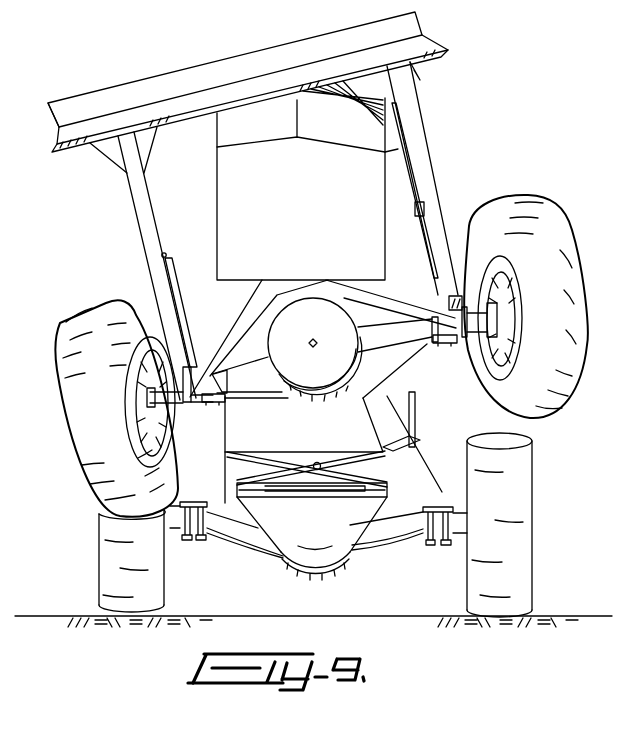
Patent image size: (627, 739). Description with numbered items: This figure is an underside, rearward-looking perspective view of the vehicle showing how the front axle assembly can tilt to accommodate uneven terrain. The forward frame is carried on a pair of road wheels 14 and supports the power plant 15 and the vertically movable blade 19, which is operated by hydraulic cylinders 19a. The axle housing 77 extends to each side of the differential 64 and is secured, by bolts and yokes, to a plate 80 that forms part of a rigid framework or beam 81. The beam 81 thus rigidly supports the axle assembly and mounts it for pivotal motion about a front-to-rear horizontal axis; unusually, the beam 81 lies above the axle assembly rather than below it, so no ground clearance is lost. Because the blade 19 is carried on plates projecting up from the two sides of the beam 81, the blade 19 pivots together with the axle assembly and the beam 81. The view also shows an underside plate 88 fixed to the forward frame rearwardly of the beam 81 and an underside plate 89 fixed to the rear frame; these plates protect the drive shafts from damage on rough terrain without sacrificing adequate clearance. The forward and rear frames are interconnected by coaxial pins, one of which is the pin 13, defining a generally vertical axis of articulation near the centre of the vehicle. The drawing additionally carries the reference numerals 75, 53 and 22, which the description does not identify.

The blade 19 is at (176, 76).
The power plant 15 is at (228, 165).
The hydraulic cylinders 19a is at (178, 273).
The plate 80 is at (367, 312).
The beam 81 is at (213, 346).
The differential 64 is at (250, 393).
The axle housing 77 is at (152, 302).
The road wheels 14 is at (65, 377).
The underside plate 88 is at (233, 438).
The angle bracket 75 is at (418, 443).
The pin 13 is at (325, 470).
The underside plate 89 is at (283, 512).
The bottom ring 53 is at (332, 555).
The cylindrical legs 22 is at (108, 537).